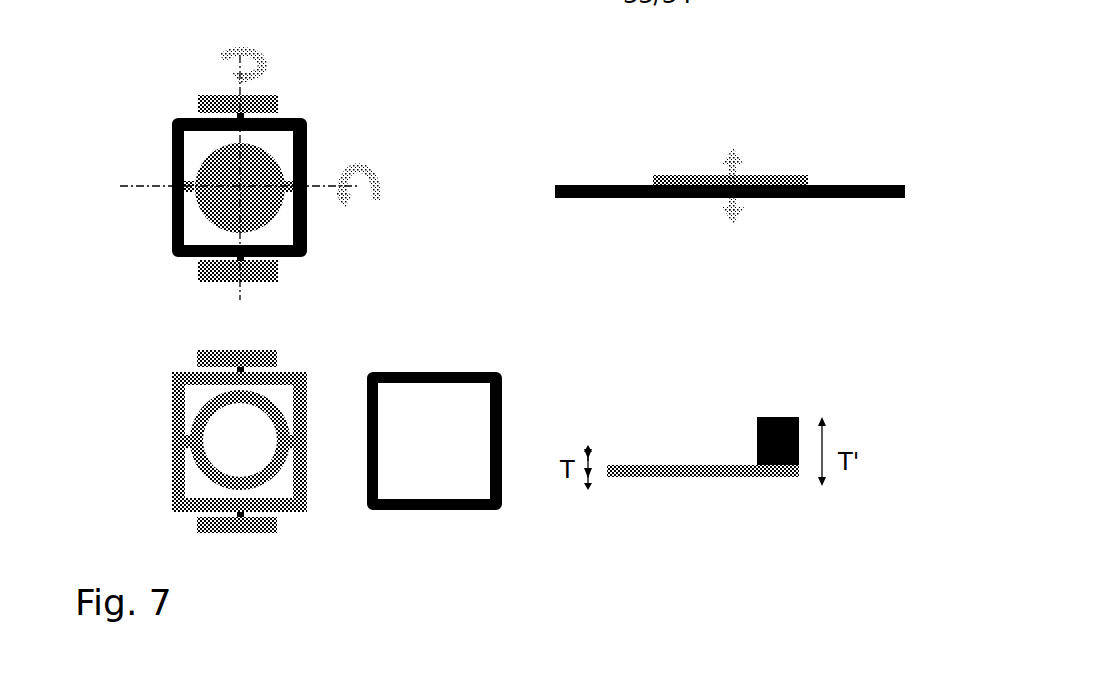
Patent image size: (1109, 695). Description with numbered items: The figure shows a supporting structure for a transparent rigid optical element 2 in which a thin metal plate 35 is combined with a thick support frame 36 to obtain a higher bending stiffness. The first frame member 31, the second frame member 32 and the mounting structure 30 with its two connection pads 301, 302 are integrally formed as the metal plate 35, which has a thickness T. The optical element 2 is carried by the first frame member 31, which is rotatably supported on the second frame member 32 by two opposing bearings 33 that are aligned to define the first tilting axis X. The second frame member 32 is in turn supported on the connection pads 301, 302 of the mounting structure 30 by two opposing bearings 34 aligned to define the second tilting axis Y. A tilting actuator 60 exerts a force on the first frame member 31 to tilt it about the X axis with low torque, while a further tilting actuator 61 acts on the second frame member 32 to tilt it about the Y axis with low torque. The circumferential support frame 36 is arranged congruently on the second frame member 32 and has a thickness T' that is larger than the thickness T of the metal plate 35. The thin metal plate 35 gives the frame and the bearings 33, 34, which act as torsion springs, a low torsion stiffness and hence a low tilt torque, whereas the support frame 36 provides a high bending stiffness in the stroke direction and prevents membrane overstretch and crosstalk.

The transparent rigid optical element 2 is at (250, 185).
The mounting structure 30 is at (165, 152).
The first frame member 31 is at (178, 212).
The second frame member 32 is at (305, 470).
The bearings 33 is at (187, 180).
The bearings 34 is at (245, 118).
The metal plate 35 is at (176, 460).
The support frame 36 is at (305, 228).
The tilting actuator 60 is at (225, 65).
The tilting actuator 61 is at (372, 172).
The connection pad 301 is at (205, 100).
The connection pad 302 is at (262, 273).